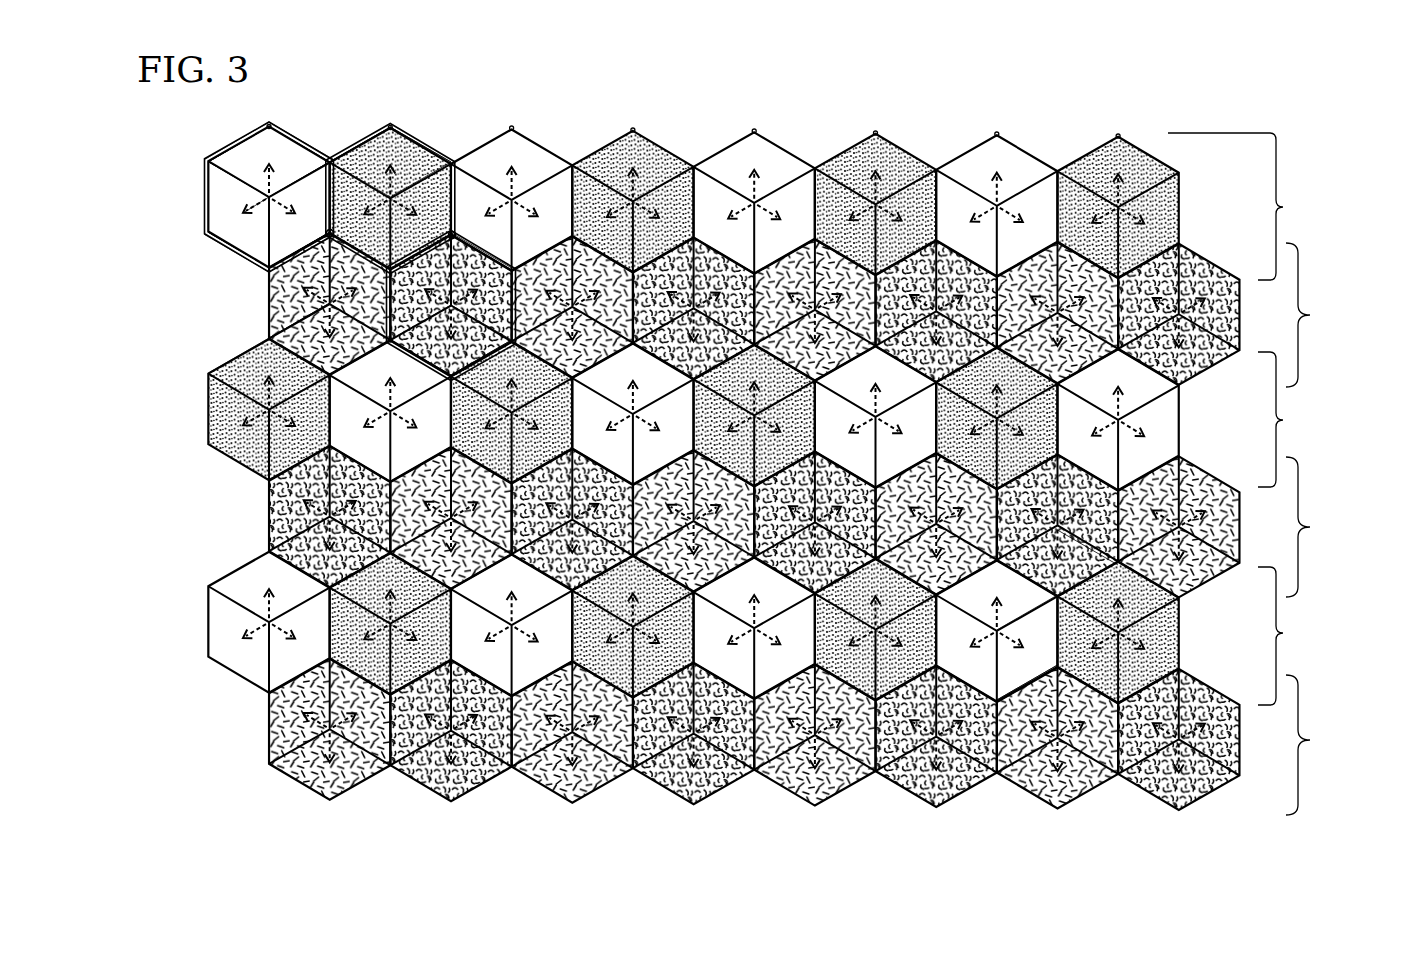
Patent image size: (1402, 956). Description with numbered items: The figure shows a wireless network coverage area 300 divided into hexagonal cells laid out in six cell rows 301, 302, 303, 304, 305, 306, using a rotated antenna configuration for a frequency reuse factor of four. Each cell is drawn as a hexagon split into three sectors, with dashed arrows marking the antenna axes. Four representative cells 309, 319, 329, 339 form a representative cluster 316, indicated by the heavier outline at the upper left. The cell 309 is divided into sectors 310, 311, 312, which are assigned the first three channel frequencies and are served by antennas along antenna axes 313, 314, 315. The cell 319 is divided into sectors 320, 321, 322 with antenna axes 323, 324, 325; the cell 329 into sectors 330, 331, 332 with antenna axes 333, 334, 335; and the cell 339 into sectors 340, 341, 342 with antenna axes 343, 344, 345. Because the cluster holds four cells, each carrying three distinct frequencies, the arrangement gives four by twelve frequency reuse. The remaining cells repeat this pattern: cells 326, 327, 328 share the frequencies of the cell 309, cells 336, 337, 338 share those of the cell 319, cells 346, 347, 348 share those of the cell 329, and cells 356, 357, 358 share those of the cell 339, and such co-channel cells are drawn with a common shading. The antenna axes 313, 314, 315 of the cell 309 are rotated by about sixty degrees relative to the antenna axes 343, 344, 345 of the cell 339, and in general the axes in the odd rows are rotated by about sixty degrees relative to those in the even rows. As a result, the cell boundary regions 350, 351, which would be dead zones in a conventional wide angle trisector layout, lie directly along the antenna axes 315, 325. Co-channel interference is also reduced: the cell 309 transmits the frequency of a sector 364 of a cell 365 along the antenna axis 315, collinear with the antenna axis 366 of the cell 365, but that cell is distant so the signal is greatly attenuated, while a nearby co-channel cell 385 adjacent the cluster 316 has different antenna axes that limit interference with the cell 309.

The wireless network coverage area 300 is at (165, 715).
The cell row 301 is at (1252, 206).
The cell row 302 is at (1323, 315).
The cell row 303 is at (1297, 419).
The cell row 304 is at (1323, 527).
The cell row 305 is at (1297, 636).
The cell row 306 is at (1323, 745).
The cell 309 is at (271, 121).
The sector 310 is at (230, 205).
The sector 311 is at (237, 143).
The sector 312 is at (306, 187).
The antenna axis 313 is at (252, 203).
The antenna axis 314 is at (238, 167).
The antenna axis 315 is at (283, 205).
The representative cluster 316 is at (205, 203).
The cell 319 is at (394, 121).
The sector 320 is at (375, 203).
The sector 321 is at (388, 150).
The sector 322 is at (453, 197).
The antenna axis 323 is at (347, 150).
The antenna axis 324 is at (433, 195).
The antenna axis 325 is at (468, 238).
The cell 326 is at (514, 122).
The cell 327 is at (755, 124).
The cell 328 is at (997, 128).
The cell 329 is at (470, 240).
The sector 330 is at (433, 358).
The sector 331 is at (388, 342).
The sector 332 is at (478, 330).
The antenna axis 333 is at (462, 320).
The antenna axis 334 is at (513, 272).
The antenna axis 335 is at (513, 320).
The cell 336 is at (635, 124).
The cell 337 is at (875, 126).
The cell 338 is at (1119, 130).
The cell 339 is at (262, 314).
The sector 340 is at (270, 342).
The sector 341 is at (316, 242).
The sector 342 is at (387, 288).
The antenna axis 343 is at (285, 328).
The antenna axis 344 is at (290, 283).
The antenna axis 345 is at (334, 233).
The cell 346 is at (708, 242).
The cell 347 is at (943, 243).
The cell 348 is at (1202, 250).
The cell boundary region 350 is at (331, 229).
The cell boundary region 351 is at (468, 238).
The cell 356 is at (592, 240).
The cell 357 is at (828, 242).
The cell 358 is at (1068, 250).
The sector 364 is at (1032, 638).
The cell 365 is at (1046, 577).
The antenna axis 366 is at (1010, 640).
The co-channel cell 385 is at (282, 493).